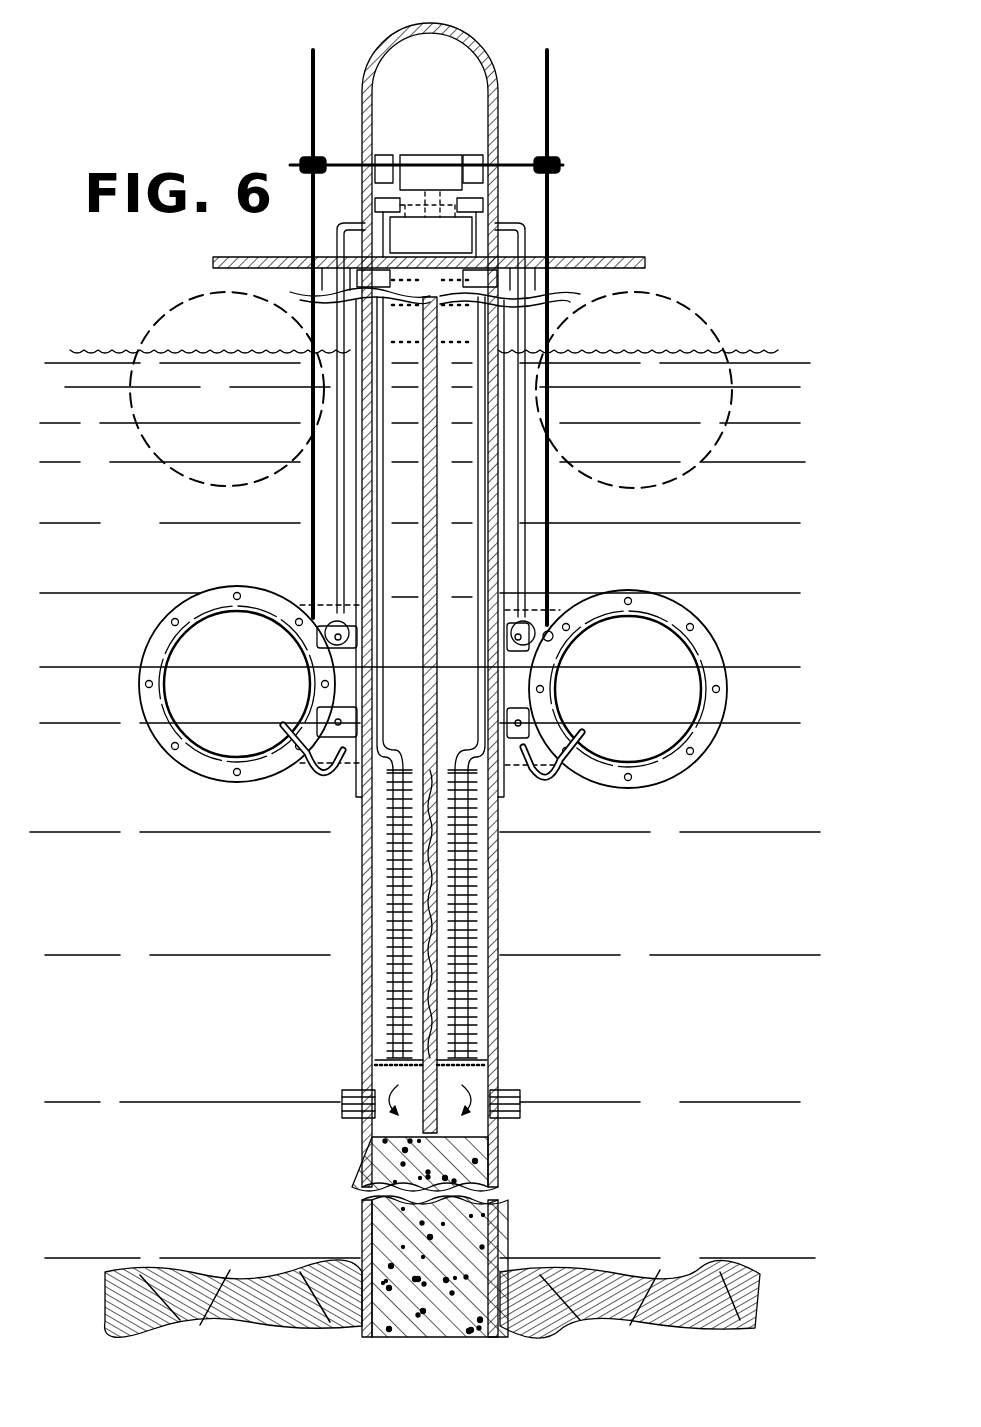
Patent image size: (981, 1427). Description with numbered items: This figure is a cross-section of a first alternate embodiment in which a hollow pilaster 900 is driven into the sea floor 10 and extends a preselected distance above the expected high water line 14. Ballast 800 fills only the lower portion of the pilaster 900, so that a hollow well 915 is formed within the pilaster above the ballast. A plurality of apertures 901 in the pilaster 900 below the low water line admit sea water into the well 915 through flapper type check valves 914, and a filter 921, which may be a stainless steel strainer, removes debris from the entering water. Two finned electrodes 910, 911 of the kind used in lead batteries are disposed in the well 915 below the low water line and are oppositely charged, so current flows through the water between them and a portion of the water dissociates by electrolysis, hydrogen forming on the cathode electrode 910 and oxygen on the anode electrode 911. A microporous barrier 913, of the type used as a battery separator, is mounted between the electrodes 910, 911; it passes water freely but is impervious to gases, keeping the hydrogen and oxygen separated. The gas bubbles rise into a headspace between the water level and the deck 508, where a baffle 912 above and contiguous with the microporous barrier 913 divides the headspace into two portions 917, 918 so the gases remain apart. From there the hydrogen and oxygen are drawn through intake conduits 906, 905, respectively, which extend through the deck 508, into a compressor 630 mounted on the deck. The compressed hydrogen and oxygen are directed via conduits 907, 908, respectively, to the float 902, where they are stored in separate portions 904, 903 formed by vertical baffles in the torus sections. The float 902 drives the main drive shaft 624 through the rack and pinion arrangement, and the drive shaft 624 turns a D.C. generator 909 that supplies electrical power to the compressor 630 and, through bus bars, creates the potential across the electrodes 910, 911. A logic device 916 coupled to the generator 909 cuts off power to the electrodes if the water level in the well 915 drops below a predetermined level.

The pilaster 900 is at (480, 33).
The main drive shaft 624 is at (384, 155).
The D.C. generator 909 is at (452, 187).
The logic device 916 is at (375, 203).
The compressor 630 is at (452, 250).
The deck 508 is at (598, 257).
The intake conduit 905 is at (318, 292).
The intake conduit 906 is at (545, 296).
The headspace portion 918 is at (414, 333).
The headspace portion 917 is at (466, 333).
The expected high water line 14 is at (748, 350).
The conduit 908 is at (338, 552).
The conduit 907 is at (527, 550).
The baffle 912 is at (438, 553).
The microporous barrier 913 is at (440, 850).
The filter 921 is at (381, 525).
The hollow well 915 is at (413, 649).
The float portion 903 is at (258, 657).
The float portion 904 is at (655, 655).
The float 902 is at (715, 633).
The cathode electrode 910 is at (392, 928).
The anode electrode 911 is at (470, 928).
The flapper type check valve 914 is at (378, 1063).
The aperture 901 is at (345, 1094).
The ballast 800 is at (452, 1265).
The sea floor 10 is at (610, 1258).